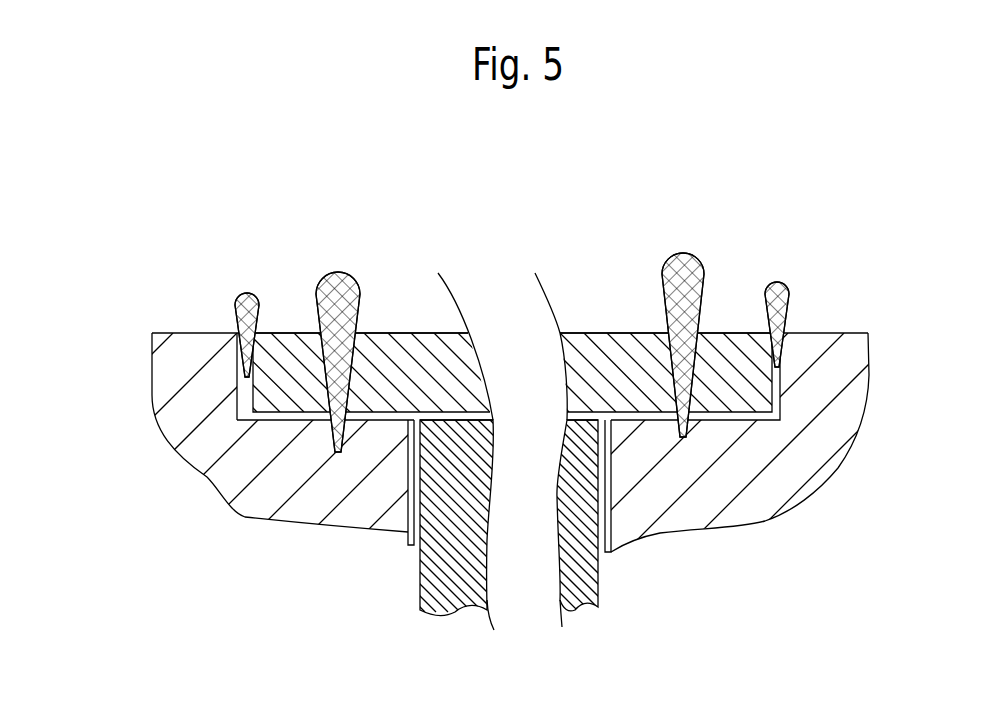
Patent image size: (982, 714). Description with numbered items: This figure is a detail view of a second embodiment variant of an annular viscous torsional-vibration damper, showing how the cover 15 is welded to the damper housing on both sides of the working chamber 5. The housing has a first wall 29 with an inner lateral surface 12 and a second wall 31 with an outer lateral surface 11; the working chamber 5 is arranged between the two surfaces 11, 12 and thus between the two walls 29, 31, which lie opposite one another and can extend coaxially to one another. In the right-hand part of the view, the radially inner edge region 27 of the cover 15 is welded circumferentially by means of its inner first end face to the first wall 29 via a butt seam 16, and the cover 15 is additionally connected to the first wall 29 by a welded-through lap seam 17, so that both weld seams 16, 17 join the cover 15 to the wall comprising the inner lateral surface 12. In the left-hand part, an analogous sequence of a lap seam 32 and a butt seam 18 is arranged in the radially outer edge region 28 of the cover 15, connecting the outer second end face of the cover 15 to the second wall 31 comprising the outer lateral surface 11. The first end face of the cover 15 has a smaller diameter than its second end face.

The working chamber 5 is at (415, 515).
The outer lateral surface 11 is at (405, 462).
The inner lateral surface 12 is at (612, 517).
The cover 15 is at (750, 385).
The butt seam 16 is at (795, 290).
The lap seam 17 is at (662, 264).
The butt seam 18 is at (232, 308).
The radially inner edge region 27 is at (750, 245).
The radially outer edge region 28 is at (220, 260).
The first wall 29 is at (770, 472).
The second wall 31 is at (260, 488).
The lap seam 32 is at (332, 327).